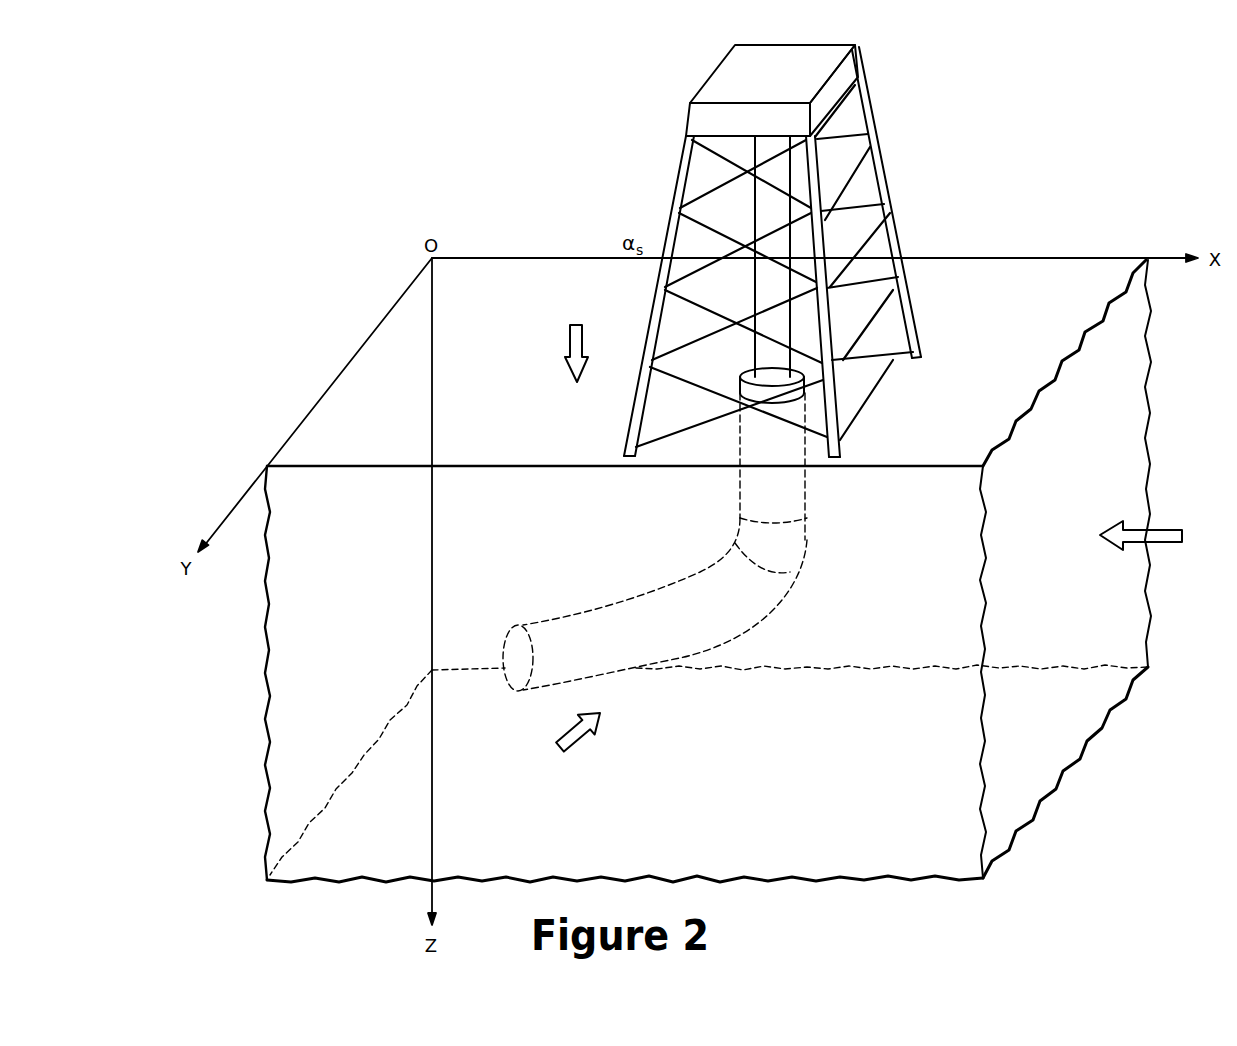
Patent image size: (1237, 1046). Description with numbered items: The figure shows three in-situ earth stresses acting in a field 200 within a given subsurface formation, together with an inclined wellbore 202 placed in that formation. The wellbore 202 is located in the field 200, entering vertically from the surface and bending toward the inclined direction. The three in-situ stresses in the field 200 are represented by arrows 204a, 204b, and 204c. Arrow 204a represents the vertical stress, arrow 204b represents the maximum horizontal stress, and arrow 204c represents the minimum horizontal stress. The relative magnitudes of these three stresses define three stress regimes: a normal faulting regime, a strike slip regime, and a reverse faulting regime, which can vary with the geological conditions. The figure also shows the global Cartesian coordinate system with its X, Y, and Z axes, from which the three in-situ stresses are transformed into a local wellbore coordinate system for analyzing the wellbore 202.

The field 200 is at (388, 130).
The wellbore 202 is at (575, 617).
The arrow representing the vertical stress 204a is at (575, 325).
The arrow representing the maximum horizontal stress 204b is at (1120, 529).
The arrow representing the minimum horizontal stress 204c is at (598, 722).